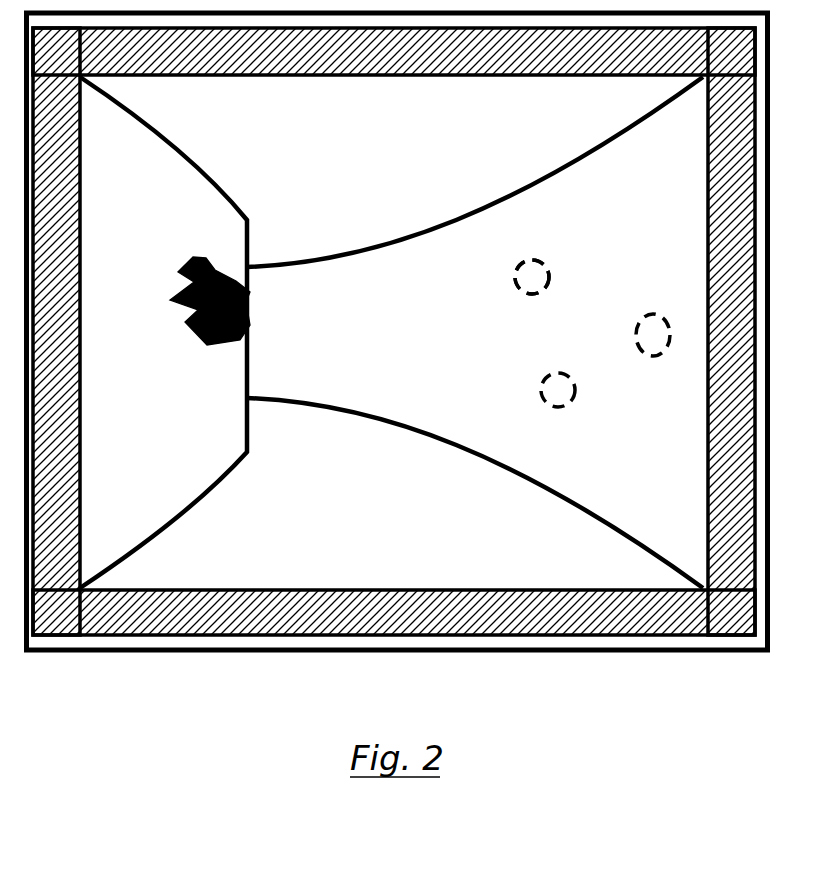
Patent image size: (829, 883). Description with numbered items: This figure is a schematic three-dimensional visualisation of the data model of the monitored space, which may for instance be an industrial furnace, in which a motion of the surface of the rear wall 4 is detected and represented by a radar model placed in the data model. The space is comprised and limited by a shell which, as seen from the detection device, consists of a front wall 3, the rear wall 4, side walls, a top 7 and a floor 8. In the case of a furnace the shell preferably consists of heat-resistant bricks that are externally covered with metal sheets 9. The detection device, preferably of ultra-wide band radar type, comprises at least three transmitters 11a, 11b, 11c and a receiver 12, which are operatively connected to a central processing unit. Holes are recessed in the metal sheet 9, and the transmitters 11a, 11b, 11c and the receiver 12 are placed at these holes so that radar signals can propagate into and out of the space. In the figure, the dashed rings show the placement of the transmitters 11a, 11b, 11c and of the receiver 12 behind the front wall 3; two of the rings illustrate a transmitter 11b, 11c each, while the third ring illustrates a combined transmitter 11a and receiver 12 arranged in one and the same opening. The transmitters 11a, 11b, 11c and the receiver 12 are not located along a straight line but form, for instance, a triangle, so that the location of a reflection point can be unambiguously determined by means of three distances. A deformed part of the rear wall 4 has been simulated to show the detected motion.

The front wall 3 is at (708, 470).
The rear wall 4 is at (80, 440).
The top 7 is at (343, 60).
The floor 8 is at (347, 600).
The metal sheets 9 is at (470, 654).
The transmitter 11a is at (533, 268).
The transmitter 11b is at (660, 333).
The transmitter 11c is at (560, 380).
The receiver 12 is at (520, 286).